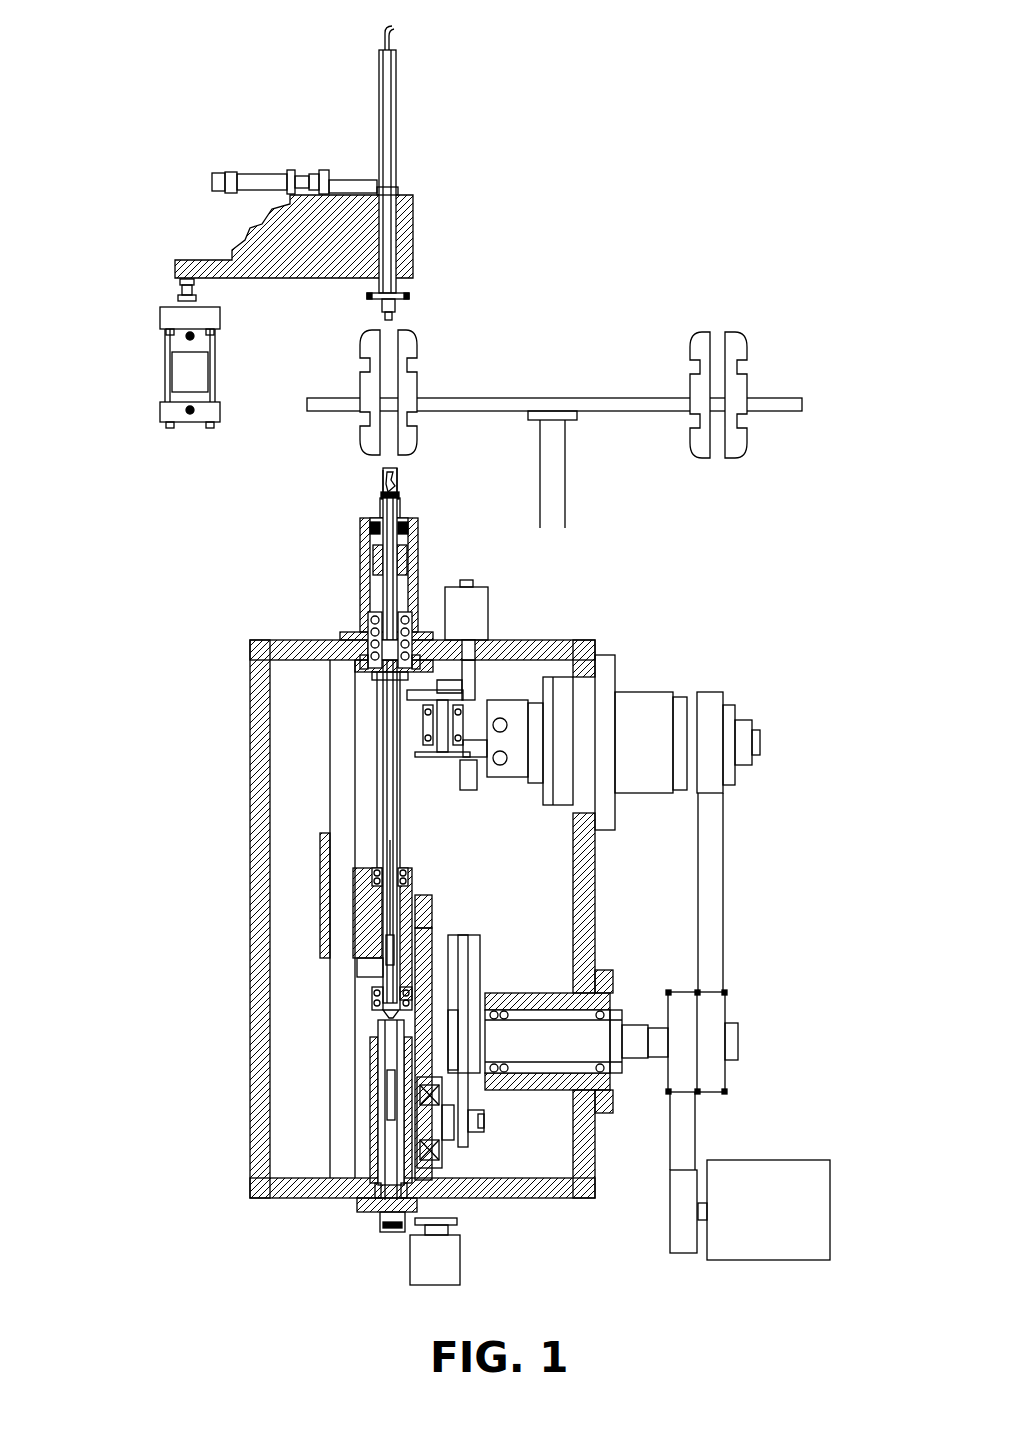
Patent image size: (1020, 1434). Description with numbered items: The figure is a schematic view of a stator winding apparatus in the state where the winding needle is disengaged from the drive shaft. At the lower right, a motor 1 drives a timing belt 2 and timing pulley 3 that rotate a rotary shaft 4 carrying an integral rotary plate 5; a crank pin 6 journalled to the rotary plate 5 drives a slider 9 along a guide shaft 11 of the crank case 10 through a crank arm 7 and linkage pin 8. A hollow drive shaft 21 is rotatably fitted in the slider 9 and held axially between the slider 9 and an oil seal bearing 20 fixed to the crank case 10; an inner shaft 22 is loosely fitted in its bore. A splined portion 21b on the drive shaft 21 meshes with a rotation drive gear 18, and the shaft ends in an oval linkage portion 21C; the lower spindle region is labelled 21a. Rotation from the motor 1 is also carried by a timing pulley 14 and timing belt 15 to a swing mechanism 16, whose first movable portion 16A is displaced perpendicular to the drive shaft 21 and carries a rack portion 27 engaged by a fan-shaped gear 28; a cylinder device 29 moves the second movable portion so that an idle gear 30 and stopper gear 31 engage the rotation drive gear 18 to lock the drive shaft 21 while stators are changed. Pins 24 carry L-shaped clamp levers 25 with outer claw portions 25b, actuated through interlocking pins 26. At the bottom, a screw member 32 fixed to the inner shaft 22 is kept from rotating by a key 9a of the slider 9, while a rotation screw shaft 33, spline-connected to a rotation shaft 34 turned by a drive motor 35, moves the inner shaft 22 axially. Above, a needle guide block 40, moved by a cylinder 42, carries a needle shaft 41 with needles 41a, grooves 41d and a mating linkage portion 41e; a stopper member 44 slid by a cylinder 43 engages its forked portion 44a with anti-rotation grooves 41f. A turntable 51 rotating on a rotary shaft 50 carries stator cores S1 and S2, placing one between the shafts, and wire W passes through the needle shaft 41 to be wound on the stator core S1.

The motor 1 is at (805, 1172).
The timing belt 2 is at (697, 1140).
The timing pulley 3 is at (668, 993).
The rotary shaft 4 is at (565, 1045).
The rotary plate 5 is at (465, 957).
The crank pin 6 is at (450, 1170).
The crank arm 7 is at (428, 940).
The linkage pin 8 is at (427, 913).
The slider 9 is at (322, 895).
The key 9a is at (360, 970).
The crank case 10 is at (570, 643).
The guide shaft 11 is at (268, 815).
The timing pulley 14 is at (727, 1003).
The timing belt 15 is at (723, 914).
The swing mechanism 16 is at (660, 676).
The first movable portion 16A is at (500, 765).
The rotation drive gear 18 is at (385, 690).
The oil seal bearing 20 is at (418, 563).
The drive shaft 21 is at (385, 582).
The spindle lower portion 21a is at (388, 838).
The splined portion 21b is at (384, 762).
The linkage portion 21C is at (396, 468).
The inner shaft 22 is at (391, 863).
The pins 24 is at (399, 499).
The clamp lever 25 is at (398, 481).
The claw portion 25b is at (383, 471).
The interlocking pins 26 is at (383, 494).
The rack portion 27 is at (473, 758).
The fan-shaped gear 28 is at (428, 753).
The cylinder device 29 is at (480, 613).
The idle gear 30 is at (450, 702).
The stopper gear 31 is at (445, 682).
The screw member 32 is at (375, 1000).
The rotation screw shaft 33 is at (387, 1014).
The rotation shaft 34 is at (373, 1150).
The drive motor 35 is at (455, 1255).
The needle guide block 40 is at (415, 238).
The needle shaft 41 is at (398, 102).
The needles 41a is at (355, 293).
The grooves 41d is at (390, 309).
The mating linkage portion 41e is at (395, 318).
The anti-rotation grooves 41f is at (400, 190).
The cylinder 42 is at (160, 375).
The cylinder 43 is at (215, 175).
The stopper member 44 is at (325, 175).
The forked portion 44a is at (380, 183).
The rotary shaft 50 is at (566, 482).
The turntable 51 is at (510, 396).
The stator core S1 is at (366, 437).
The stator core S2 is at (745, 338).
The wire W is at (397, 29).